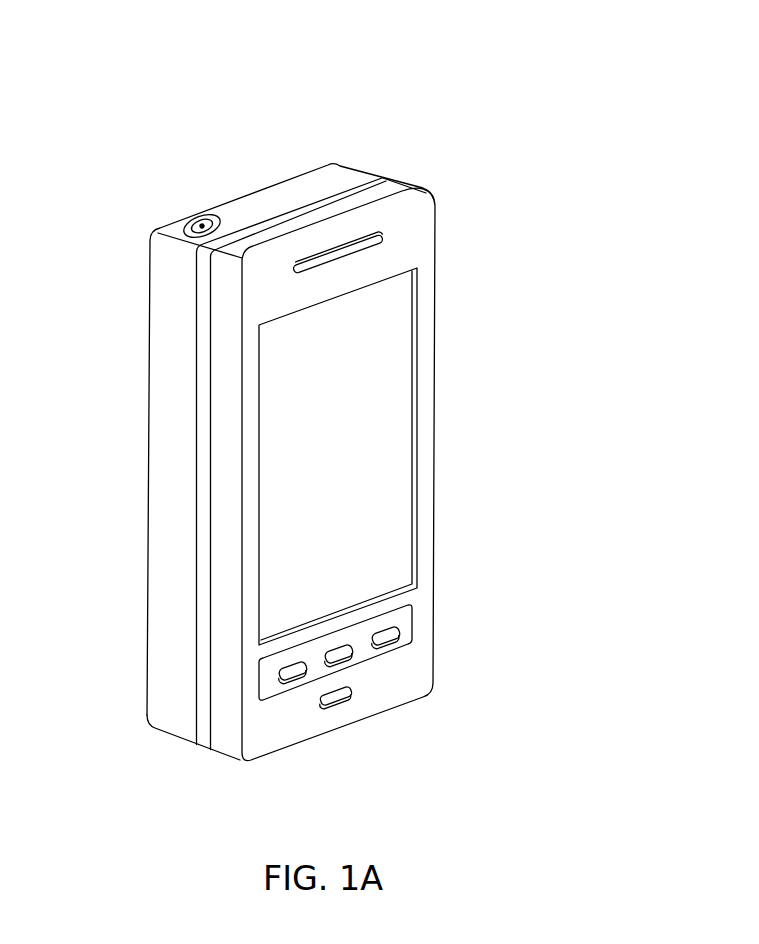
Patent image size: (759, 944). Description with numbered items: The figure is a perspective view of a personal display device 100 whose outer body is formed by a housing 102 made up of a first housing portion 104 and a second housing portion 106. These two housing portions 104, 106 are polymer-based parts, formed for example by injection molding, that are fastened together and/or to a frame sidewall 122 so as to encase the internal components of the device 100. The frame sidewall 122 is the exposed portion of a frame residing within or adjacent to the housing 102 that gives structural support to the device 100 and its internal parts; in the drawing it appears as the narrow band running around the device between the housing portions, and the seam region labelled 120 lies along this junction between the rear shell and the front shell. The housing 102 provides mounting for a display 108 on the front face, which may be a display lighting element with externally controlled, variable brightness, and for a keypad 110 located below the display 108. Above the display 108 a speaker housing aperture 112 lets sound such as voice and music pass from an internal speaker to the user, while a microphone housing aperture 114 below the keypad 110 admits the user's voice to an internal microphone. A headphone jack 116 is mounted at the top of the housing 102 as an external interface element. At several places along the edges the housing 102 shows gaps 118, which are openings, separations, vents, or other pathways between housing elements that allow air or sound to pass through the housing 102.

The display device 100 is at (634, 105).
The housing 102 is at (147, 597).
The first housing portion 104 is at (170, 741).
The second housing portion 106 is at (225, 757).
The display 108 is at (397, 362).
The keypad 110 is at (412, 613).
The speaker housing aperture 112 is at (307, 258).
The microphone housing aperture 114 is at (345, 700).
The headphone jack 116 is at (202, 224).
The gaps 118 is at (183, 222).
The band / seam between housings 120 is at (193, 670).
The frame sidewall 122 is at (385, 177).